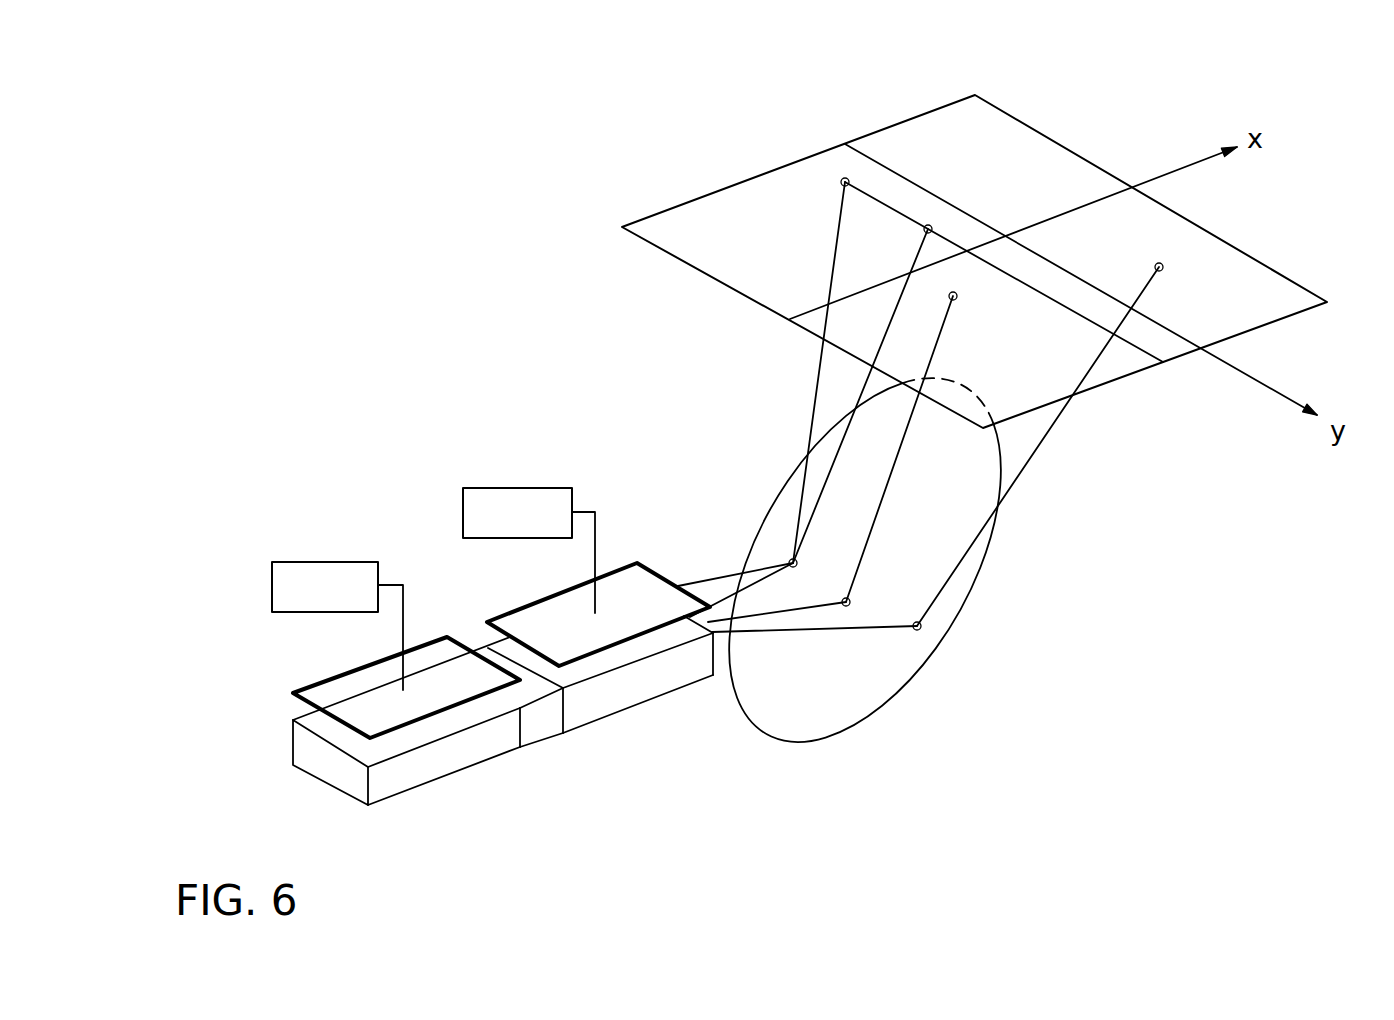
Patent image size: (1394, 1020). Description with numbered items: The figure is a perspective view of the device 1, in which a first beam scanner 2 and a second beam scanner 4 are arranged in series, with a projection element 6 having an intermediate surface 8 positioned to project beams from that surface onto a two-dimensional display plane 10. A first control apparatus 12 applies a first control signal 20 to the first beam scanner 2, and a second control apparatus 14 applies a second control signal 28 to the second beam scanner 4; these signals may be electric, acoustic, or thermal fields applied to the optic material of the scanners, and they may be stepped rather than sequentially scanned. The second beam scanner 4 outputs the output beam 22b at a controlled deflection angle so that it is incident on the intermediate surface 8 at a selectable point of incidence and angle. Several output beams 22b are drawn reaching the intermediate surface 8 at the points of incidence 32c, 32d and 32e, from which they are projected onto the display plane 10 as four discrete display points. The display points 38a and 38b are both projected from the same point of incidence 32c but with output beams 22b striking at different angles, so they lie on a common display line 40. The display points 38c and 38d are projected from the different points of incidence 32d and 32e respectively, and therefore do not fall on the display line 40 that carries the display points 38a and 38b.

The device 1 is at (565, 362).
The first beam scanner 2 is at (473, 753).
The second beam scanner 4 is at (607, 702).
The projection element 6 is at (933, 662).
The intermediate surface 8 is at (850, 692).
The two-dimensional display plane 10 is at (1065, 147).
The first control apparatus 12 is at (346, 605).
The second control apparatus 14 is at (536, 531).
The first control signal 20 is at (398, 623).
The output beam 22b is at (895, 795).
The second control signal 28 is at (593, 555).
The point of incidence 32c is at (793, 563).
The point of incidence 32d is at (846, 602).
The point of incidence 32e is at (917, 626).
The display point 38a is at (840, 185).
The display point 38b is at (928, 228).
The display point 38c is at (953, 296).
The display point 38d is at (1163, 267).
The display line 40 is at (838, 176).